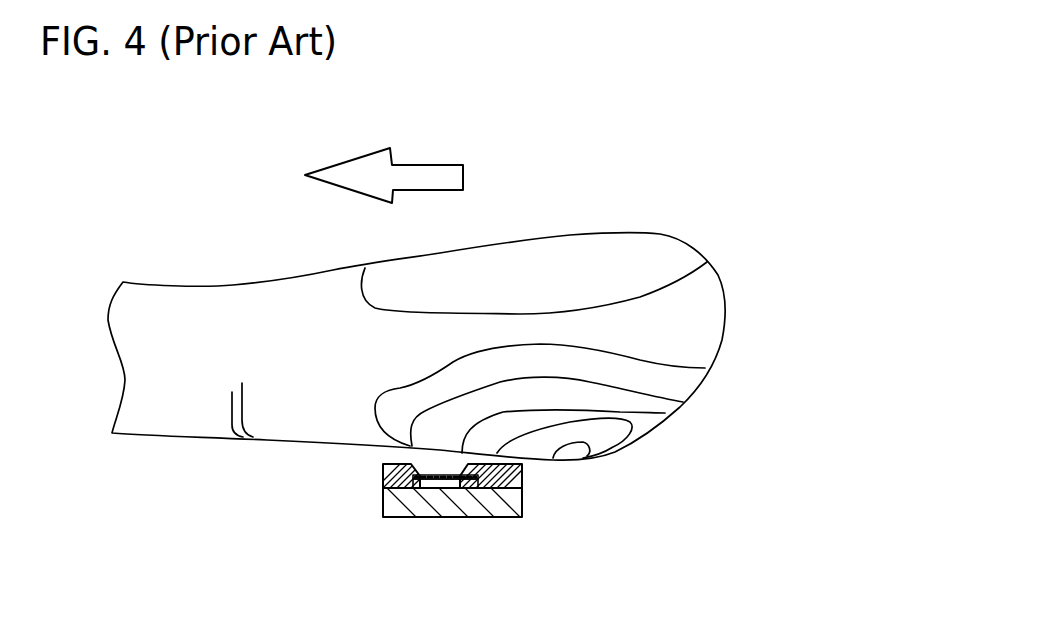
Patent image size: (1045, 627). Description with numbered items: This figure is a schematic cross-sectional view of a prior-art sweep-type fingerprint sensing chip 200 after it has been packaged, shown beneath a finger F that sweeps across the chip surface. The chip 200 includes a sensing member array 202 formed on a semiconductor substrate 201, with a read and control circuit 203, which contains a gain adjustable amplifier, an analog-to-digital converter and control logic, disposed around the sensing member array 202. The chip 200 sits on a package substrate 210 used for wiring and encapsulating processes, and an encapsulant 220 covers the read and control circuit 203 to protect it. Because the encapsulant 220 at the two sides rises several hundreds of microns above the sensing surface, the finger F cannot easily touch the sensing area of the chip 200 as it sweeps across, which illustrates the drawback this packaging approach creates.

The finger F is at (722, 340).
The sweep-type fingerprint sensing chip 200 is at (550, 349).
The semiconductor substrate 201 is at (432, 490).
The sensing member array 202 is at (443, 475).
The read and control circuit 203 is at (418, 490).
The package substrate 210 is at (383, 503).
The encapsulant 220 is at (546, 349).